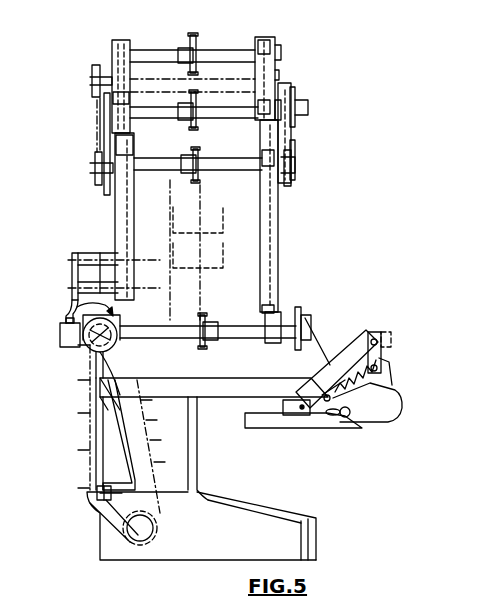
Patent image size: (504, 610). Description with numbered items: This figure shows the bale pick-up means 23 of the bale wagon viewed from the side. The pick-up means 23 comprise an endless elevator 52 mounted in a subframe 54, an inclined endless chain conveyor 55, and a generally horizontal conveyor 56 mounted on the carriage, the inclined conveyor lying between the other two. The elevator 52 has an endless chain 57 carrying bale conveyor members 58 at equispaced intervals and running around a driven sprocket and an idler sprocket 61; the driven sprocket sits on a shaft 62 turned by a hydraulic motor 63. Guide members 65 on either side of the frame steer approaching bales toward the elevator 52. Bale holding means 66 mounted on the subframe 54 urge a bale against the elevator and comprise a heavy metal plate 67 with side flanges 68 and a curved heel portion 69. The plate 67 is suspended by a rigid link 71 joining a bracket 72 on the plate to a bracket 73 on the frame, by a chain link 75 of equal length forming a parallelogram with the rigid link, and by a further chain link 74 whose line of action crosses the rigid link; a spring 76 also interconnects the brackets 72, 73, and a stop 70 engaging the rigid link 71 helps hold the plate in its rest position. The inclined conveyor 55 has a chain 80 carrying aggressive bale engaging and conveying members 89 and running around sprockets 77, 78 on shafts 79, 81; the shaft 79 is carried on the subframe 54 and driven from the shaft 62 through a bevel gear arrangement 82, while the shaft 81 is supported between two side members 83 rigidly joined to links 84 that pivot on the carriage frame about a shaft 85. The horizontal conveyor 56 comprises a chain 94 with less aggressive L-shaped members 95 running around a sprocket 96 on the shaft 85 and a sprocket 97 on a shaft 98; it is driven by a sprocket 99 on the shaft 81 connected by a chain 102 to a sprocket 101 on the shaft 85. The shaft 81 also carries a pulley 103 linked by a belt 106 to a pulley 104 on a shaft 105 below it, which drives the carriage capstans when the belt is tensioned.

The pick-up means 23 is at (307, 290).
The endless elevator 52 is at (250, 469).
The subframe 54 is at (210, 478).
The inclined endless chain conveyor 55 is at (110, 237).
The horizontal conveyor 56 is at (282, 62).
The endless chain 57 is at (88, 438).
The bale conveyor members 58 is at (148, 400).
The idler sprocket 61 is at (158, 540).
The shaft 62 is at (86, 340).
The hydraulic motor 63 is at (88, 376).
The guide members 65 is at (285, 522).
The bale holding means 66 is at (380, 400).
The plate 67 is at (346, 420).
The side flanges 68 is at (245, 428).
The curved heel portion 69 is at (373, 408).
The stop 70 is at (300, 404).
The rigid link 71 is at (322, 398).
The bracket 72 is at (190, 395).
The bracket 73 is at (385, 360).
The chain link 74 is at (352, 345).
The chain link 75 is at (373, 385).
The spring 76 is at (384, 345).
The sprocket 77 is at (207, 327).
The sprocket 78 is at (199, 155).
The shaft 79 is at (172, 327).
The chain 80 is at (214, 225).
The shaft 81 is at (172, 170).
The bevel gear arrangement 82 is at (66, 321).
The side members 83 is at (118, 222).
The links 84 is at (100, 138).
The shaft 85 is at (170, 112).
The bale engaging and conveying members 89 is at (220, 250).
The chain 94 is at (185, 79).
The bale engaging and conveying members 95 is at (195, 75).
The sprocket 96 is at (196, 103).
The sprocket 97 is at (190, 40).
The shaft 98 is at (225, 48).
The sprocket 99 is at (300, 170).
The sprocket 101 is at (296, 92).
The chain 102 is at (296, 132).
The pulley 103 is at (97, 185).
The pulley 104 is at (93, 89).
The shaft 105 is at (108, 70).
The belt 106 is at (95, 125).